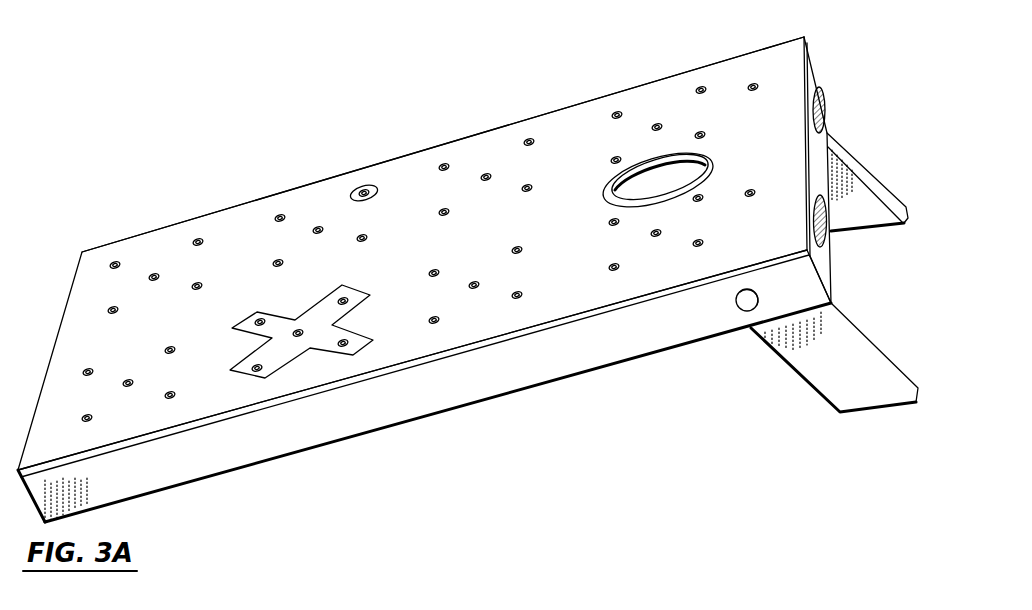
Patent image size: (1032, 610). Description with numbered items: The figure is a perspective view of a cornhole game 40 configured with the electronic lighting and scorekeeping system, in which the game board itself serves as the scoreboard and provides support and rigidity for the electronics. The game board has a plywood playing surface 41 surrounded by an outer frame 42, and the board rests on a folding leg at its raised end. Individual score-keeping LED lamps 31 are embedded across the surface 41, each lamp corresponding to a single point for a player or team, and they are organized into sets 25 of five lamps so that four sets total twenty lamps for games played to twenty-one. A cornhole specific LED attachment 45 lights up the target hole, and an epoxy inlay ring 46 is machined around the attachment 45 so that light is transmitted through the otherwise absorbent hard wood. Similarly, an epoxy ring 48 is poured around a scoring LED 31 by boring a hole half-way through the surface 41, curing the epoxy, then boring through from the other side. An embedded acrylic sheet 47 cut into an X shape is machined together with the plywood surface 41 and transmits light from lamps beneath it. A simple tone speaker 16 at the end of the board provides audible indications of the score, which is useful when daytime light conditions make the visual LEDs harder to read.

The tone speaker 16 is at (760, 88).
The set of score-keeping LEDs 25 is at (102, 259).
The score-keeping LED lamp 31 is at (527, 138).
The cornhole game 40 is at (249, 146).
The game board surface 41 is at (388, 258).
The outer frame 42 is at (245, 444).
The cornhole specific LED attachment 45 is at (644, 165).
The epoxy inlay ring 46 is at (642, 151).
The acrylic sheet 47 is at (338, 352).
The epoxy inlay ring 48 is at (367, 184).